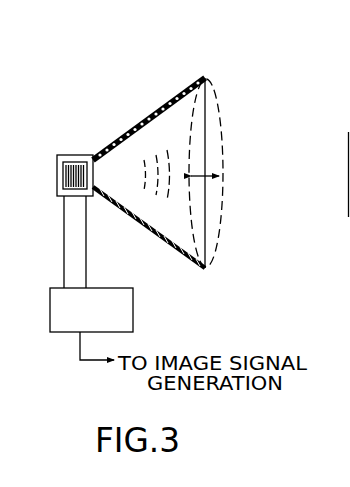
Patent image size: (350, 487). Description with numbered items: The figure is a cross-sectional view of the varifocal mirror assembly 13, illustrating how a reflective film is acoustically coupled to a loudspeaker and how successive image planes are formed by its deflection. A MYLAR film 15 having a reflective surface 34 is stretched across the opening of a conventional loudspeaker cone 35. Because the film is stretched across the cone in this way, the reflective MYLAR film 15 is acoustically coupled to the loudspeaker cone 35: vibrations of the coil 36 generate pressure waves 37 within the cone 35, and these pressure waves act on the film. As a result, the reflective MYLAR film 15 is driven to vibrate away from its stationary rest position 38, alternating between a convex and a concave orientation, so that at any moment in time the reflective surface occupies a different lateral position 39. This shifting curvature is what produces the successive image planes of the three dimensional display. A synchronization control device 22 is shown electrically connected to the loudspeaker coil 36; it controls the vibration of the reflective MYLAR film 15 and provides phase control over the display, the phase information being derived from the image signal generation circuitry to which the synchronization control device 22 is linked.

The varifocal mirror assembly 13 is at (155, 193).
The MYLAR film 15 is at (206, 131).
The synchronization control device 22 is at (91, 264).
The reflective surface 34 is at (212, 204).
The loudspeaker cone 35 is at (150, 117).
The coil 36 is at (72, 165).
The pressure waves 37 is at (147, 192).
The stationary rest position 38 is at (204, 66).
The lateral position 39 is at (190, 76).